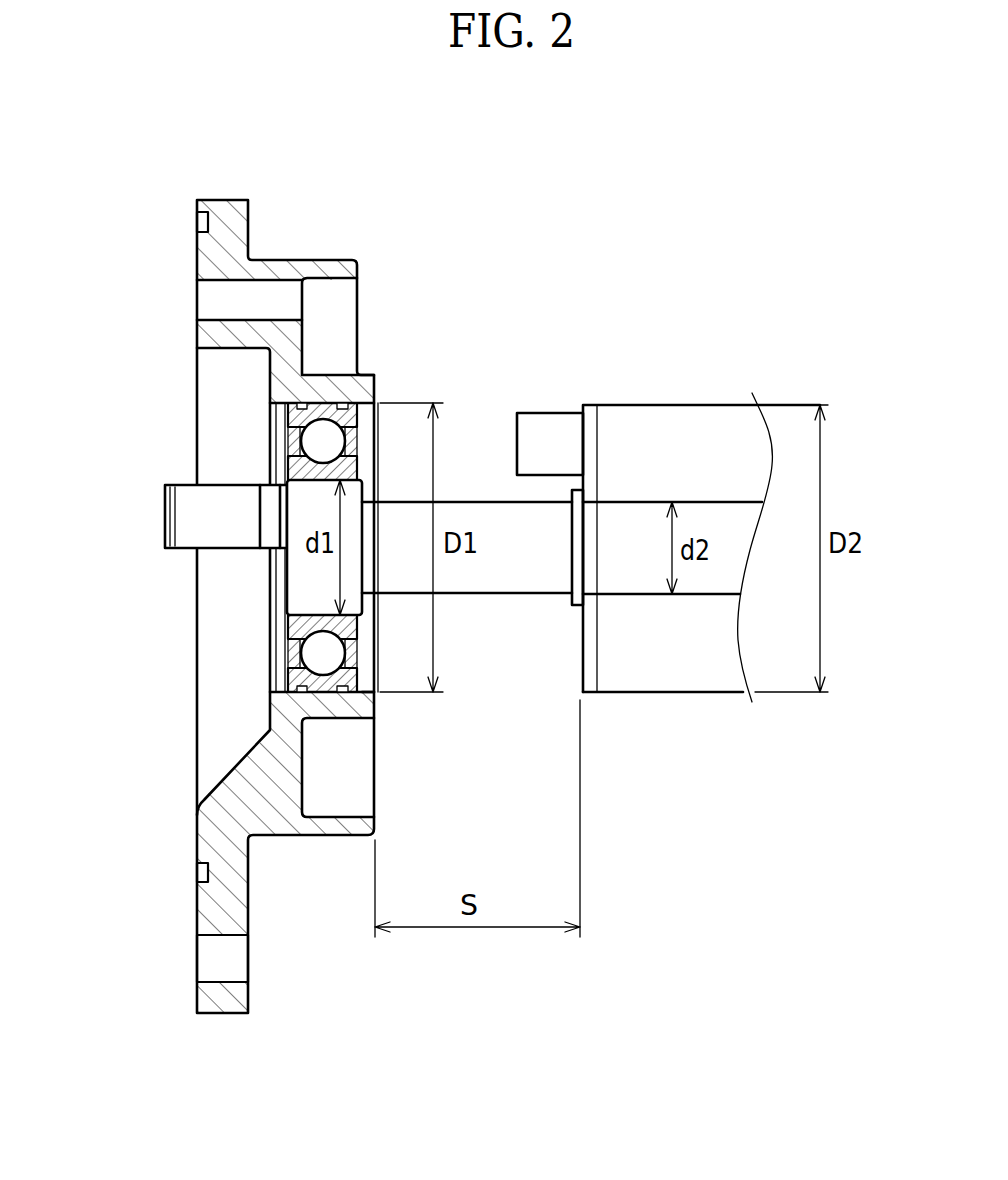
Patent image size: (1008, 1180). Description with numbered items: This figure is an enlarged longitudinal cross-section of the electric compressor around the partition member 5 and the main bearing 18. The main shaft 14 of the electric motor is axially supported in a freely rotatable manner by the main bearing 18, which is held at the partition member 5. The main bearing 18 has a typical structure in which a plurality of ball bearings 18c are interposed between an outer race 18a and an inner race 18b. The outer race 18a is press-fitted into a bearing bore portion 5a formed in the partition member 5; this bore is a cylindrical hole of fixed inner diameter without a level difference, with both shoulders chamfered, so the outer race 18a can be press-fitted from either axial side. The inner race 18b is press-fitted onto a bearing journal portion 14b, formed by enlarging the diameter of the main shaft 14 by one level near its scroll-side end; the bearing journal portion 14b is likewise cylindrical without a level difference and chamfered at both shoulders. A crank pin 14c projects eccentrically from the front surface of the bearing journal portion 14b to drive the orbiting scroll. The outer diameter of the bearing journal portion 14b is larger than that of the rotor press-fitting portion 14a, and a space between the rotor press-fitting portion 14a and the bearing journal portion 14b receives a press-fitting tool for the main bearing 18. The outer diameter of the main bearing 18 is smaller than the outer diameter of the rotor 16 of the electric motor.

The partition member 5 is at (222, 200).
The bearing bore portion 5a is at (372, 688).
The main shaft 14 is at (484, 502).
The rotor press-fitting portion 14a is at (638, 573).
The bearing journal portion 14b is at (298, 597).
The crank pin 14c is at (188, 517).
The rotor 16 is at (692, 403).
The main bearing 18 is at (206, 527).
The outer race 18a is at (298, 418).
The inner race 18b is at (298, 468).
The ball bearings 18c is at (315, 441).